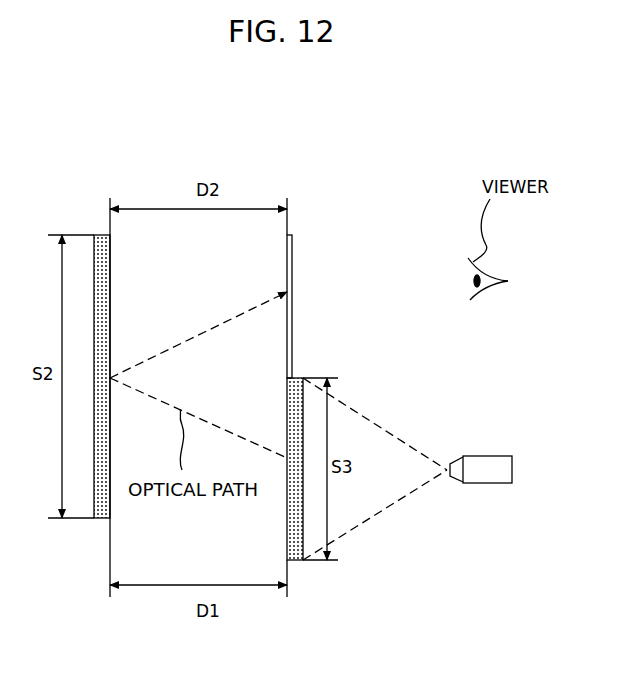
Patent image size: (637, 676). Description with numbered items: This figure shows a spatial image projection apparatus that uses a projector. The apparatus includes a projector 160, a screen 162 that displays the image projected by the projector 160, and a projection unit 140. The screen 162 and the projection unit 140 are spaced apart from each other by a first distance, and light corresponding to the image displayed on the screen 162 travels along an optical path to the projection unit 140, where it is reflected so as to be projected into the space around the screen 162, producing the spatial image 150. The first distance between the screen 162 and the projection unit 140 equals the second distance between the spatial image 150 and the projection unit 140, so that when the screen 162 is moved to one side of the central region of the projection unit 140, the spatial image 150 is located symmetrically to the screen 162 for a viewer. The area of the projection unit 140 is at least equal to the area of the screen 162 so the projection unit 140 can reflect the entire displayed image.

The projection unit 140 is at (100, 235).
The spatial image 150 is at (290, 235).
The screen 162 is at (293, 564).
The projector 160 is at (495, 484).